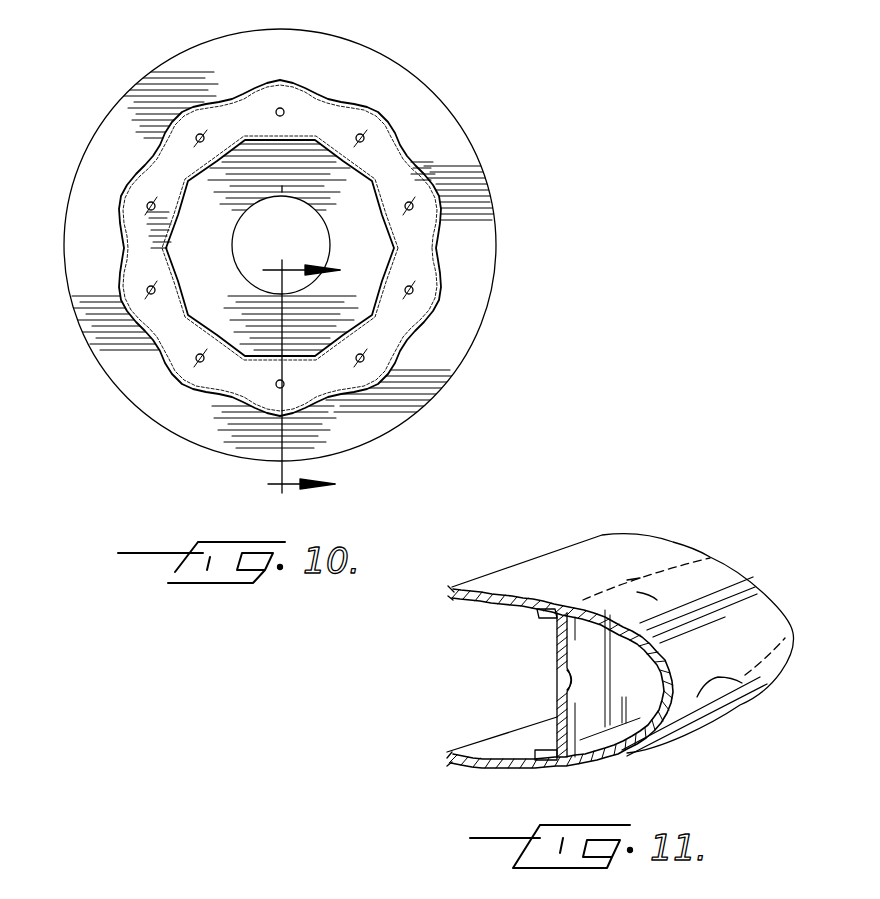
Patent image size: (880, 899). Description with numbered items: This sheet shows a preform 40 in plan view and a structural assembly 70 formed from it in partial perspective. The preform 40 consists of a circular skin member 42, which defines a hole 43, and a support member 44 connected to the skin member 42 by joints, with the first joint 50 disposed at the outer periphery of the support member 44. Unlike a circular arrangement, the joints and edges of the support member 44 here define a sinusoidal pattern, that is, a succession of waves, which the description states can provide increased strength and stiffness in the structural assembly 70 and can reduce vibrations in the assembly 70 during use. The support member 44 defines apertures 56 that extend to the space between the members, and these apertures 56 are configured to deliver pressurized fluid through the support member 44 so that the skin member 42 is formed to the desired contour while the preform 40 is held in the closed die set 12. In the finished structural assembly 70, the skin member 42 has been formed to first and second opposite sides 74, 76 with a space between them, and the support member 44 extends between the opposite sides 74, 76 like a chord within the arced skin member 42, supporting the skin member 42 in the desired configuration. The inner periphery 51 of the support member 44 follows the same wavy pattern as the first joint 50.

In FIG. 10, the die set 12 is at (282, 370).
In FIG. 10, the preform 40 is at (470, 93).
In FIG. 10, the skin member 42 is at (148, 88).
In FIG. 11, the skin member 42 is at (550, 573).
In FIG. 10, the hole 43 is at (302, 205).
In FIG. 10, the support member 44 is at (158, 178).
In FIG. 11, the support member 44 is at (557, 647).
In FIG. 10, the first joint 50 is at (425, 177).
In FIG. 10, the inner wavy periphery 51 is at (398, 269).
In FIG. 10, the apertures 56 is at (153, 289).
In FIG. 11, the apertures 56 is at (567, 680).
In FIG. 11, the structural assembly 70 is at (728, 545).
In FIG. 11, the first side 74 is at (630, 563).
In FIG. 11, the second side 76 is at (493, 772).